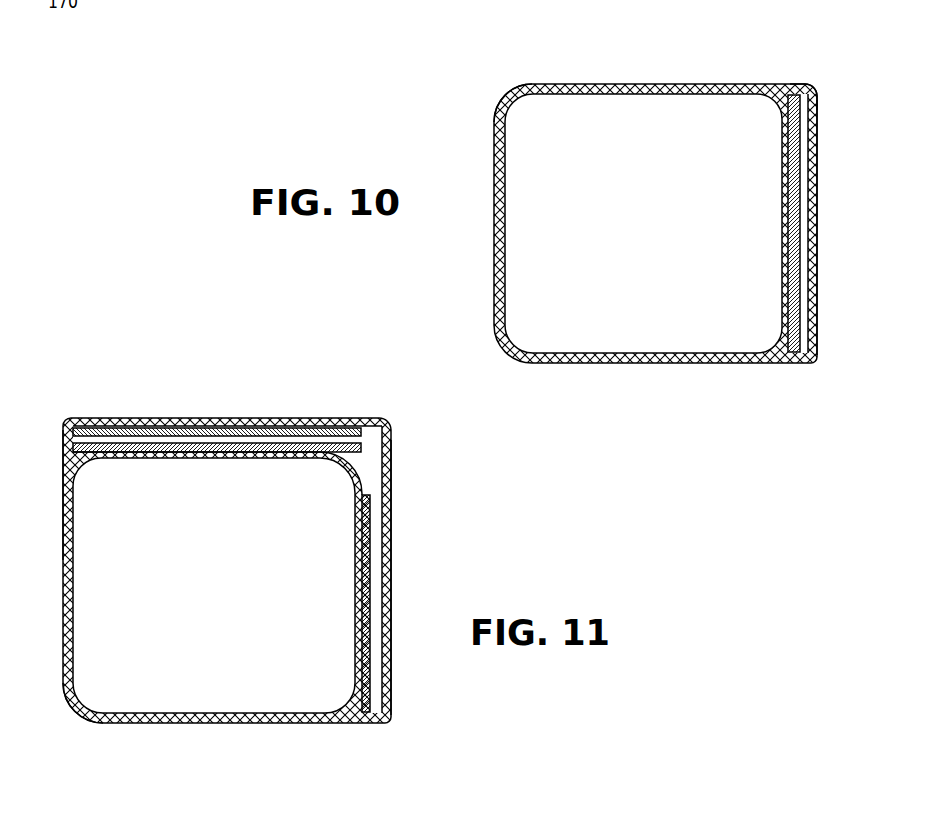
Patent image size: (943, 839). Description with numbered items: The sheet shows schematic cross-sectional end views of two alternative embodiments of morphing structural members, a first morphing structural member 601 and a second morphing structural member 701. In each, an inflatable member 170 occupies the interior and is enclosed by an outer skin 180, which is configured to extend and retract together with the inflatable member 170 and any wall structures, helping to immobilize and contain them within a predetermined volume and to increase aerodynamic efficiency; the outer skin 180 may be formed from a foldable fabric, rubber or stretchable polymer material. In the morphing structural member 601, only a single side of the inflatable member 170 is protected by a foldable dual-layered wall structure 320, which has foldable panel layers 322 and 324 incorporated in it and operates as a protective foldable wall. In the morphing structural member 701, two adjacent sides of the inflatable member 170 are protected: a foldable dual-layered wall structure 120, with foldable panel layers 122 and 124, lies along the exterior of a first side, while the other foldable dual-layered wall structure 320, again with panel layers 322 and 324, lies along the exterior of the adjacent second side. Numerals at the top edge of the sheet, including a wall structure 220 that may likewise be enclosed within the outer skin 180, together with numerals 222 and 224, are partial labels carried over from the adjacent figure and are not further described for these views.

In FIG. 10, the morphing structural member 601 is at (543, 62).
In FIG. 11, the morphing structural member 701 is at (340, 384).
In FIG. 10, the inflatable member 170 is at (786, 82).
In FIG. 11, the inflatable member 170 is at (73, 462).
In FIG. 10, the outer skin 180 is at (516, 95).
In FIG. 11, the outer skin 180 is at (72, 708).
In FIG. 11, the foldable dual-layered wall structure 120 is at (116, 418).
In FIG. 11, the foldable panel layer 122 is at (276, 447).
In FIG. 11, the foldable panel layer 124 is at (190, 430).
In FIG. 10, the wall structure 220 is at (135, 0).
In FIG. 10, the panel 222 is at (202, 0).
In FIG. 10, the panel 224 is at (312, 0).
In FIG. 10, the foldable dual-layered wall structure 320 is at (820, 207).
In FIG. 11, the foldable dual-layered wall structure 320 is at (380, 668).
In FIG. 10, the foldable panel layer 322 is at (799, 127).
In FIG. 11, the foldable panel layer 322 is at (367, 502).
In FIG. 10, the foldable panel layer 324 is at (817, 306).
In FIG. 11, the foldable panel layer 324 is at (390, 540).